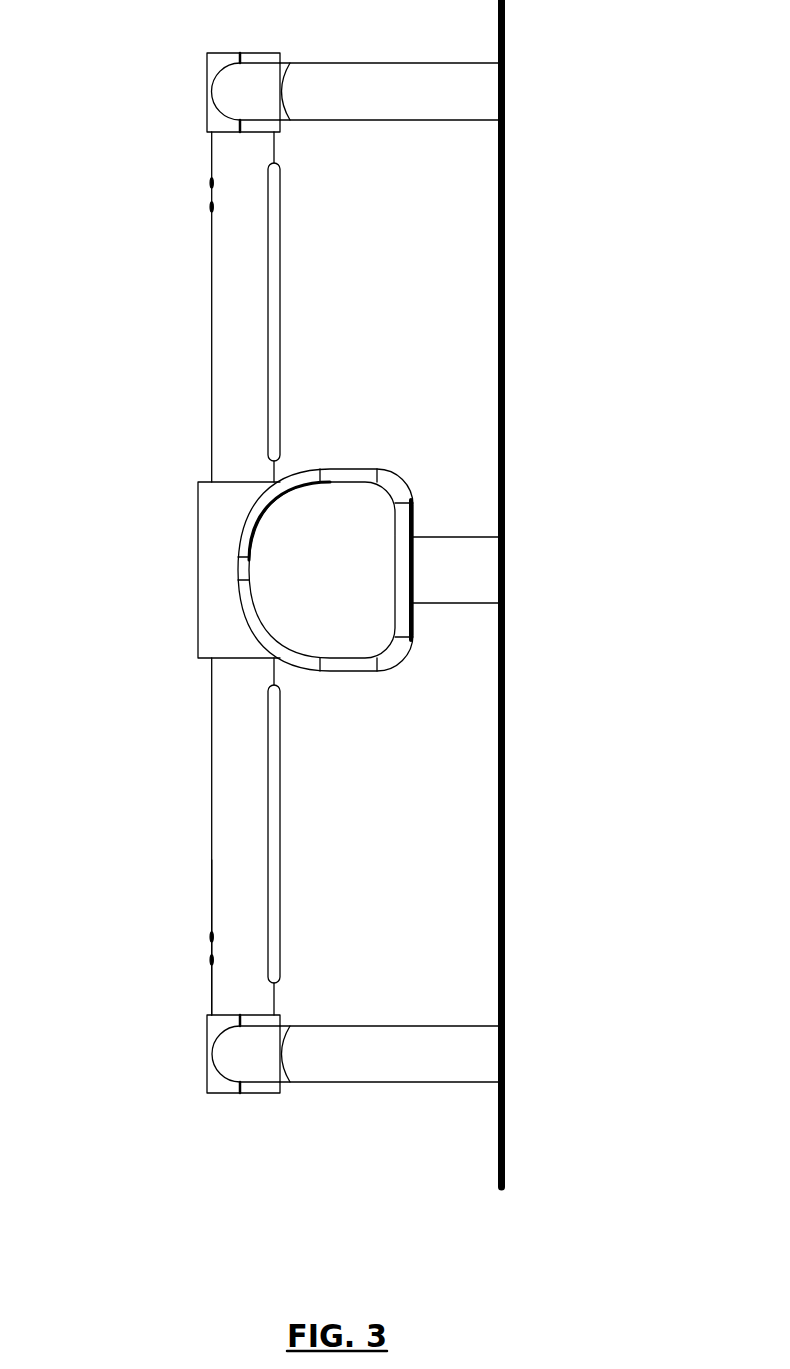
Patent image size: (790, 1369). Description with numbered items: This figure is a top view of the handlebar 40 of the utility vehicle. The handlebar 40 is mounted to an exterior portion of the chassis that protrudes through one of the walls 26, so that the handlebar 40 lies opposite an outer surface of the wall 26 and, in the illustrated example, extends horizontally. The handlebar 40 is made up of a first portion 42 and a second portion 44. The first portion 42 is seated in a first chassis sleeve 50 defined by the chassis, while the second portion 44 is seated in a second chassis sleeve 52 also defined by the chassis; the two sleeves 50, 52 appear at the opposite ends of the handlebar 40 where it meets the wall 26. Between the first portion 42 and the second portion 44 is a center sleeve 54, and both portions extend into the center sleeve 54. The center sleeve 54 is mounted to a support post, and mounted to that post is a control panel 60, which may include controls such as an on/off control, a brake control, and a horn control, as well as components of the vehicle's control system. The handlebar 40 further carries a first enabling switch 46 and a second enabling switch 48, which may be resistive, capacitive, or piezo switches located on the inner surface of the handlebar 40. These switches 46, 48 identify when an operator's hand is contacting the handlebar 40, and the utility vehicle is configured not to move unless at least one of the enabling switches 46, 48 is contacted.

The wall 26 is at (497, 848).
The handlebar 40 is at (223, 740).
The first portion 42 is at (212, 922).
The second portion 44 is at (222, 247).
The first enabling switch 46 is at (278, 830).
The second enabling switch 48 is at (277, 355).
The first chassis sleeve 50 is at (212, 1095).
The second chassis sleeve 52 is at (205, 53).
The center sleeve 54 is at (212, 533).
The control panel 60 is at (285, 610).